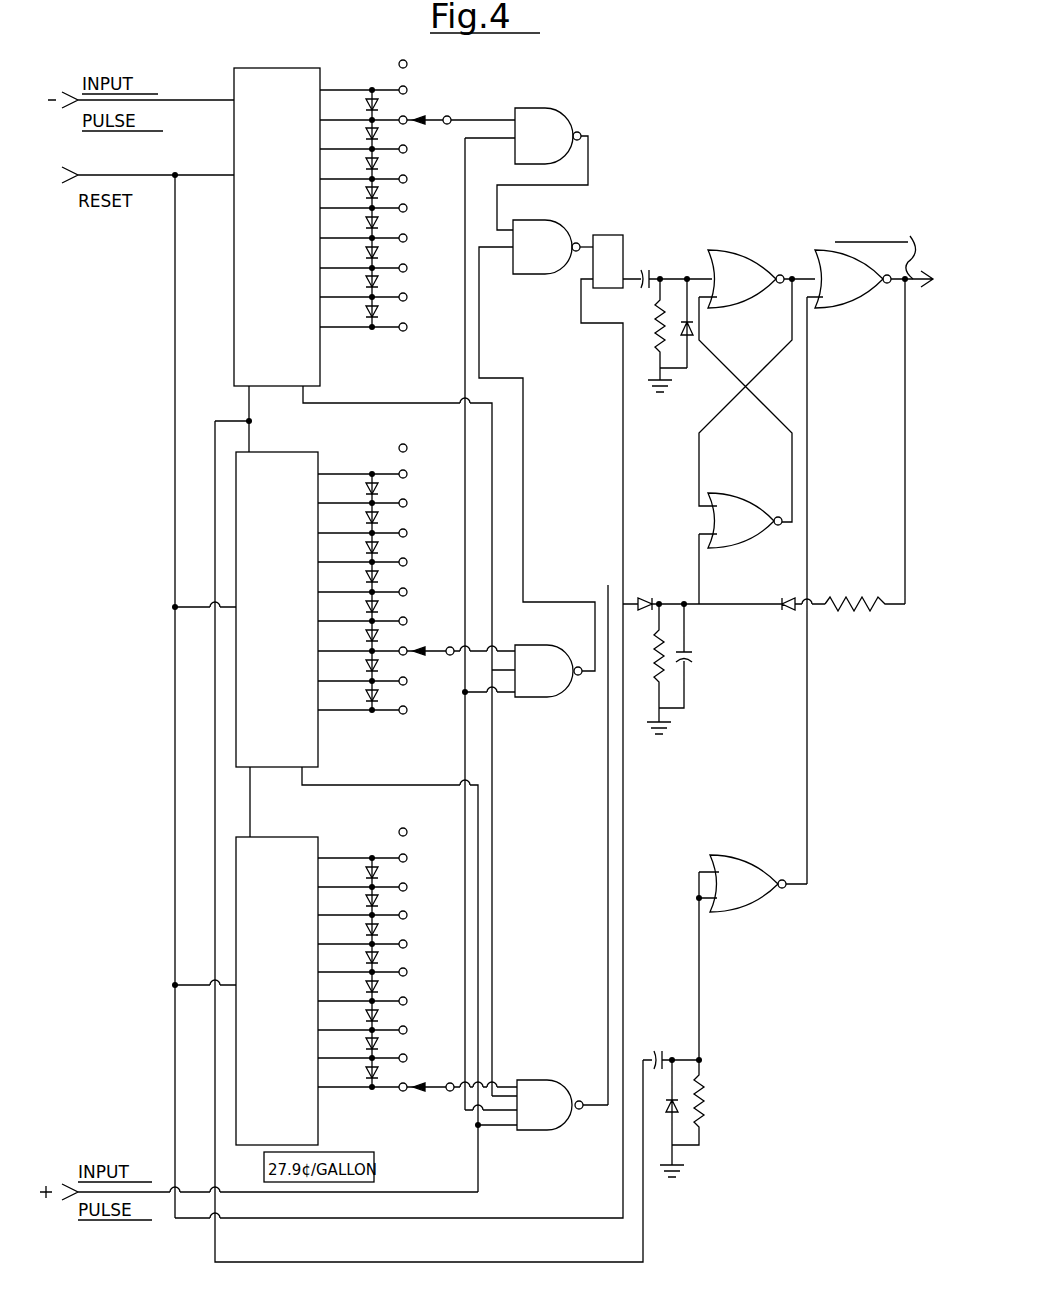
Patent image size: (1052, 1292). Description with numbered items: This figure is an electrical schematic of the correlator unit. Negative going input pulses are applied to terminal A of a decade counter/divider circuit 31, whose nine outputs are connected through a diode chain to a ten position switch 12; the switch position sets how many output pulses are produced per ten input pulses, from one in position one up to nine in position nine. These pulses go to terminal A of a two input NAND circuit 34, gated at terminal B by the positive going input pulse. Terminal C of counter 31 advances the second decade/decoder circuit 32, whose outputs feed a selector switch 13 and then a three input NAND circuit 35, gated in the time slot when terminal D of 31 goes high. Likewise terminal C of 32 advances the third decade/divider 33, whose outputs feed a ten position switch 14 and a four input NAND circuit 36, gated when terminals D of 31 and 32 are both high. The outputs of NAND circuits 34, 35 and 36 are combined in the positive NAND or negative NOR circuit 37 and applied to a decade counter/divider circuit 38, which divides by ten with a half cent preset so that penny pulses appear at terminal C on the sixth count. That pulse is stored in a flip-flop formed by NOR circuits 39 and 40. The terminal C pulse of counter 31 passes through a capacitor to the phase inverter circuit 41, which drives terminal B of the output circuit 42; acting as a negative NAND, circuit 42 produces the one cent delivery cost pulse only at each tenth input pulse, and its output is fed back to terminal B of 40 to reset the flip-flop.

The decade counter/divider circuit 31 is at (278, 42).
The decade/decoder circuit 32 is at (262, 458).
The third decade/divider 33 is at (280, 845).
The ten position switch 12 is at (406, 118).
The selector switch 13 is at (452, 657).
The ten position switch 14 is at (448, 1090).
The two input NAND circuit 34 is at (543, 112).
The three input NAND circuit 35 is at (538, 647).
The four input NAND circuit 36 is at (540, 1080).
The positive NAND or negative NOR circuit 37 is at (533, 224).
The decade counter/divider circuit 38 is at (616, 235).
The NOR circuit 39 is at (727, 255).
The NOR circuit 40 is at (733, 493).
The phase inverter circuit 41 is at (735, 857).
The output circuit 42 is at (843, 308).